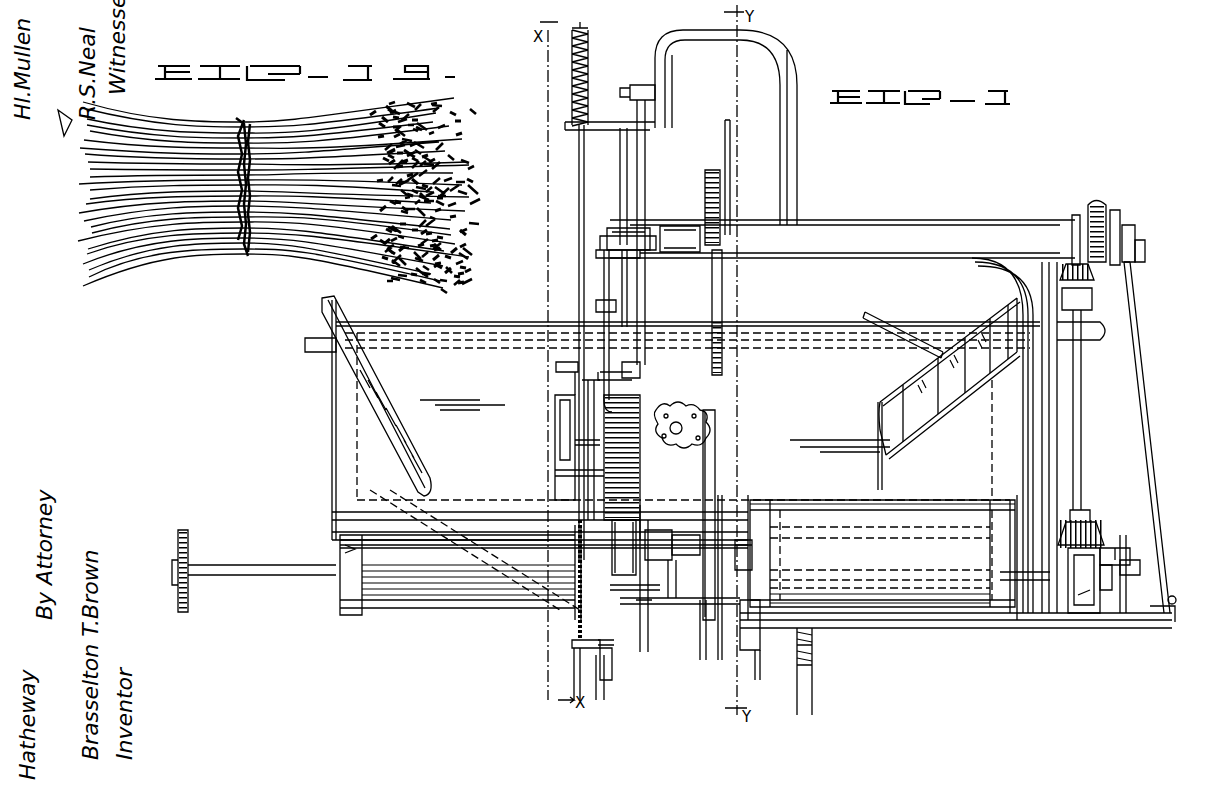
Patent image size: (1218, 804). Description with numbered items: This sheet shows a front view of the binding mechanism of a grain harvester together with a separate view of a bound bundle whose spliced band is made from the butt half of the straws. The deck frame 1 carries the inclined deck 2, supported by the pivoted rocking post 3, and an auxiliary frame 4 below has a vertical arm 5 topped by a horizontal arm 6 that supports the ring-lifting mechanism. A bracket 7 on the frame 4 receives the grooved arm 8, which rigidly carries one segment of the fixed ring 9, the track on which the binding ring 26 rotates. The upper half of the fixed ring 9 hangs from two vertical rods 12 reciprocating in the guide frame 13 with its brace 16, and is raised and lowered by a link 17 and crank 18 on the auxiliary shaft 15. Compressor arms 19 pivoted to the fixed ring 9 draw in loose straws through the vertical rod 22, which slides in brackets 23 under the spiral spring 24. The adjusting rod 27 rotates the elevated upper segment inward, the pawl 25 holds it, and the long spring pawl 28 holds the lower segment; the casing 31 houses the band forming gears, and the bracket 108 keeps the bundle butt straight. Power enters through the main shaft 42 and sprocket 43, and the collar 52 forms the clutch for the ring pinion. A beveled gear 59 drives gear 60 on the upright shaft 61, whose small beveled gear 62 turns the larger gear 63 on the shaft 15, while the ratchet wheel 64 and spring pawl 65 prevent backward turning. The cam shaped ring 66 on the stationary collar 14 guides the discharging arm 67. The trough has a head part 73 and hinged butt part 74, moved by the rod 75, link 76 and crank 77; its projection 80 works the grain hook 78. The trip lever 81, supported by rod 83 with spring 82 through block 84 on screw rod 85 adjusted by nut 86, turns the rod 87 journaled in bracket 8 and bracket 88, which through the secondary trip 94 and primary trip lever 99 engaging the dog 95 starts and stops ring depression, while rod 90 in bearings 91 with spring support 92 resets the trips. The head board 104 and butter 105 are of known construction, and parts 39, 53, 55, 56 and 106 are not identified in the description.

The deck frame 1 is at (330, 425).
The inclined deck 2 is at (478, 342).
The pivoted rocking post 3 is at (815, 648).
The auxiliary frame 4 is at (1040, 605).
The vertical arm 5 is at (1050, 485).
The horizontal arm 6 is at (876, 225).
The bracket 7 is at (748, 640).
The grooved arm 8 is at (560, 548).
The fixed ring 9 is at (642, 395).
The vertical rods 12 is at (645, 178).
The guide frame 13 is at (652, 128).
The stationary collar 14 is at (665, 235).
The auxiliary shaft 15 is at (612, 230).
The brace 16 is at (797, 120).
The link 17 is at (556, 365).
The crank 18 is at (603, 265).
The compressor arms 19 is at (556, 472).
The vertical rod 22 is at (578, 172).
The brackets 23 is at (566, 124).
The spiral spring 24 is at (590, 58).
The pawl 25 is at (632, 364).
The binding ring 26 is at (640, 492).
The adjusting rod 27 is at (621, 165).
The long spring pawl 28 is at (644, 652).
The casing 31 is at (694, 406).
The connecting rod 39 is at (660, 585).
The main shaft 42 is at (255, 562).
The sprocket 43 is at (187, 526).
The collar 52 is at (687, 542).
The clutch housing 53 is at (660, 532).
The bracket 55 is at (555, 412).
The tie bar 56 is at (555, 440).
The beveled gear 59 is at (1106, 582).
The beveled gear 60 is at (1106, 525).
The upright shaft 61 is at (1082, 400).
The small beveled gear 62 is at (1100, 282).
The beveled gear 63 is at (1100, 205).
The toothed ratchet wheel 64 is at (1116, 215).
The spring pawl 65 is at (1135, 268).
The cam shaped ring 66 is at (724, 292).
The arm 67 is at (733, 226).
The trough part 73 is at (425, 602).
The trough part 74 is at (925, 622).
The rod 75 is at (1110, 622).
The link 76 is at (1158, 410).
The crank 77 is at (1135, 254).
The grain hook 78 is at (712, 650).
The projection 80 is at (758, 680).
The trip lever 81 is at (539, 450).
The spiral spring 82 is at (560, 632).
The supporting rod 83 is at (574, 690).
The block 84 is at (600, 700).
The screw rod 85 is at (624, 680).
The nut 86 is at (614, 654).
The rod 87 is at (1012, 610).
The bracket 88 is at (1080, 615).
The rod 90 is at (672, 615).
The bearings 91 is at (745, 566).
The spring support 92 is at (560, 576).
The secondary trip 94 is at (1125, 562).
The dog 95 is at (1128, 545).
The primary trip lever 99 is at (1130, 520).
The head board 104 is at (362, 385).
The butter 105 is at (950, 334).
The trunnion 106 is at (306, 345).
The bracket 108 is at (667, 513).